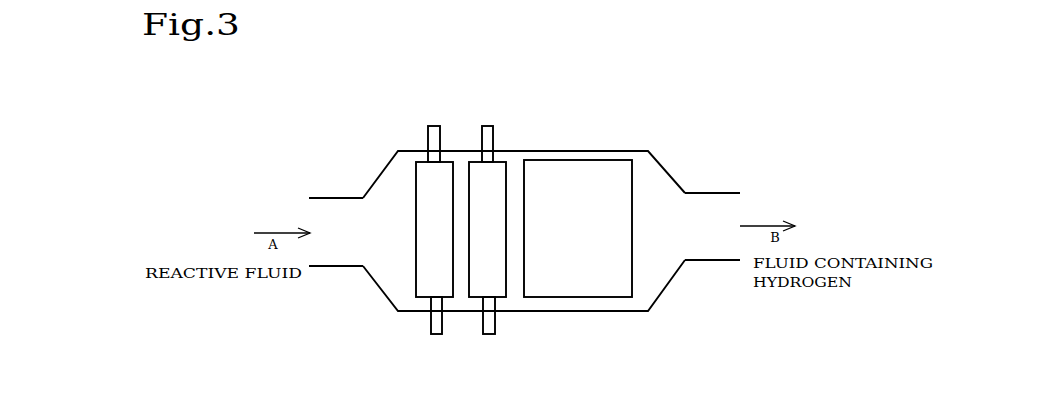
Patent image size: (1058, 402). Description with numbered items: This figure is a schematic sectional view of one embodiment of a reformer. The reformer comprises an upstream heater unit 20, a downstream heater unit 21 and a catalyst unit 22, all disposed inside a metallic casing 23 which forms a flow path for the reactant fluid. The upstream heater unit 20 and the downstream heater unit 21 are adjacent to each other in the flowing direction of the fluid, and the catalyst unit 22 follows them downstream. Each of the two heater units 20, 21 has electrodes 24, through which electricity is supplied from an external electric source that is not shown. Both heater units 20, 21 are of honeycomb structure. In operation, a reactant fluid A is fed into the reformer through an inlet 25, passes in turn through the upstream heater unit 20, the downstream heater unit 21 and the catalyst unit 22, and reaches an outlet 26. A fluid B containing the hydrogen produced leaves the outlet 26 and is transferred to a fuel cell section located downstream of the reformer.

The upstream heater unit 20 is at (445, 158).
The downstream heater unit 21 is at (502, 158).
The catalyst unit 22 is at (579, 161).
The metallic casing 23 is at (386, 163).
The electrodes 24 is at (433, 124).
The inlet 25 is at (337, 210).
The outlet 26 is at (715, 207).